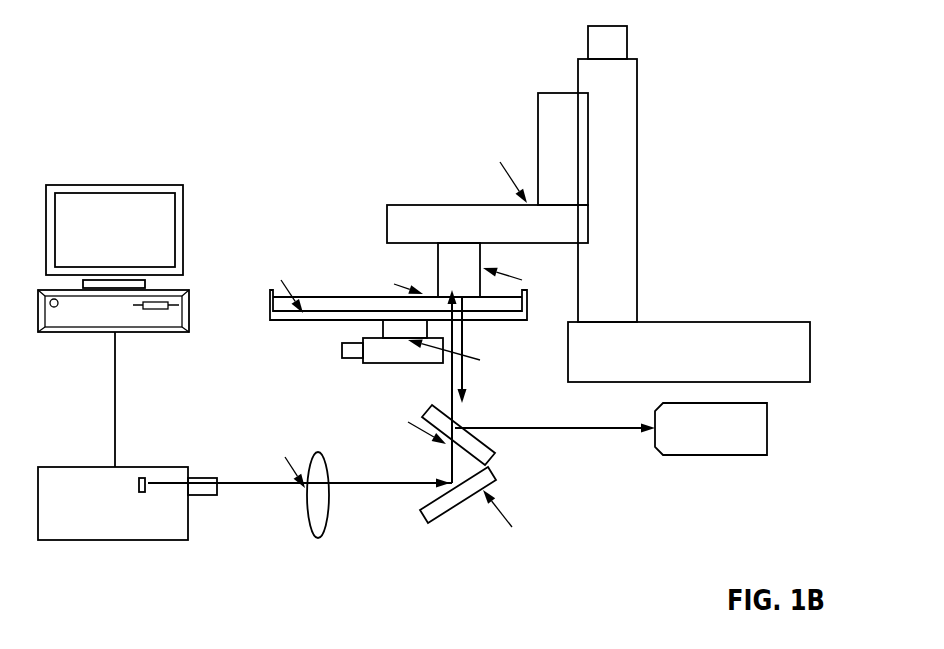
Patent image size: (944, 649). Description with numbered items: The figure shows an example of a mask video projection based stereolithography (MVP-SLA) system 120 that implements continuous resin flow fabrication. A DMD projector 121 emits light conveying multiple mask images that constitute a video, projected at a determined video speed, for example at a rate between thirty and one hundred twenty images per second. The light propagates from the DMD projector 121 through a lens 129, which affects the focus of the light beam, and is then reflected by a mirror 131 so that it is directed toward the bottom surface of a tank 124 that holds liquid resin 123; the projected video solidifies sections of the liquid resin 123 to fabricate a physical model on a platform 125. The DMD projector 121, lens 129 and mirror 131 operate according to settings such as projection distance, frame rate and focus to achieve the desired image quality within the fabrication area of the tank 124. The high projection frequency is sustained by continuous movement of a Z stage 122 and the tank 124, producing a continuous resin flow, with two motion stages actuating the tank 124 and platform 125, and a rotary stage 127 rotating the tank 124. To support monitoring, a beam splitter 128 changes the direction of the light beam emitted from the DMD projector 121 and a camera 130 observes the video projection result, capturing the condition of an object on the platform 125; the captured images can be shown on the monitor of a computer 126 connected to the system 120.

The mask video projection based stereolithography (MVP-SLA) system 120 is at (727, 31).
The DMD projector 121 is at (103, 541).
The Z stage 122 is at (455, 205).
The liquid resin 123 is at (318, 297).
The tank 124 is at (327, 322).
The platform 125 is at (437, 260).
The computer 126 is at (80, 335).
The rotary stage 127 is at (400, 364).
The beam splitter 128 is at (447, 449).
The lens 129 is at (318, 538).
The camera 130 is at (715, 456).
The mirror 131 is at (448, 511).